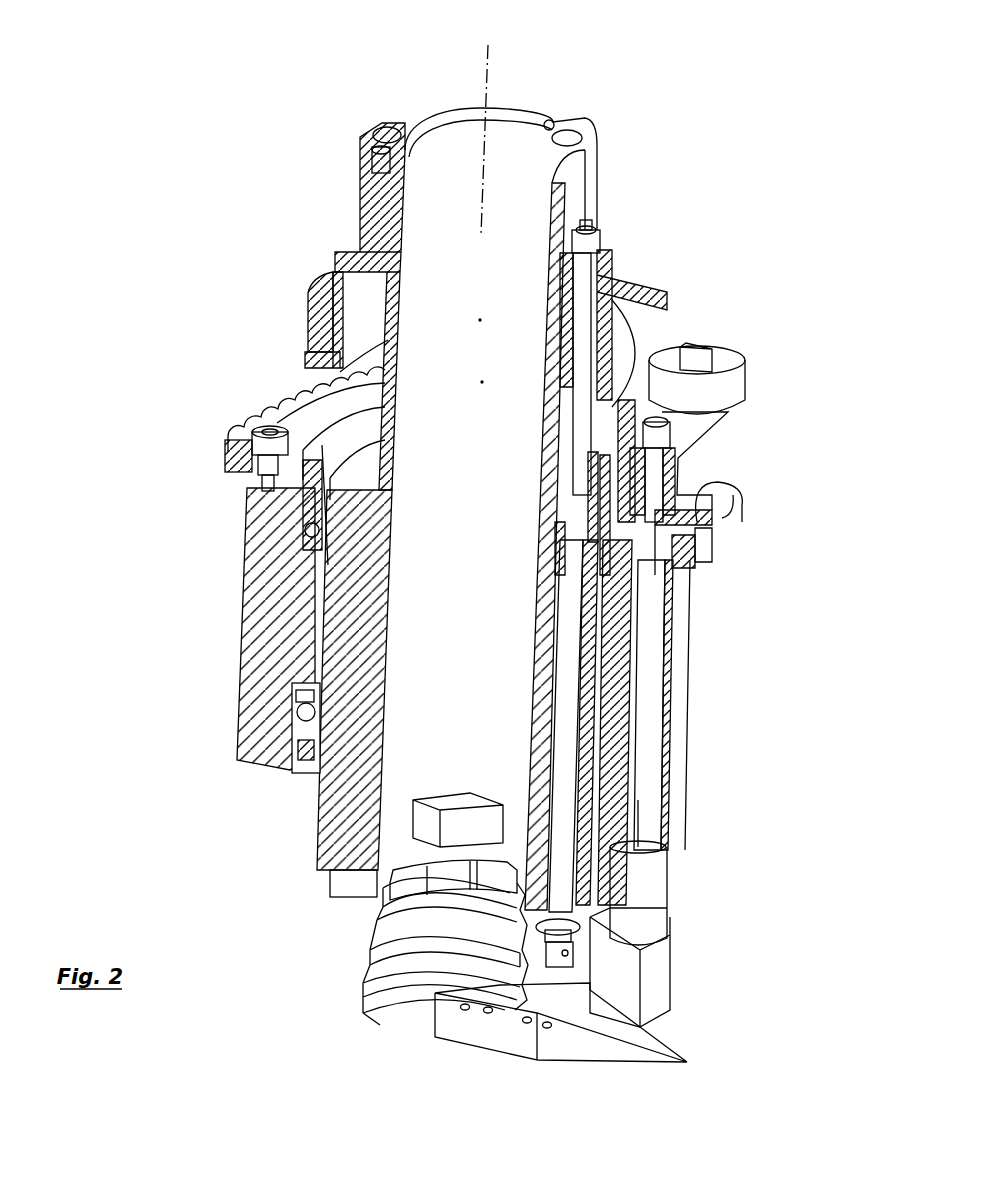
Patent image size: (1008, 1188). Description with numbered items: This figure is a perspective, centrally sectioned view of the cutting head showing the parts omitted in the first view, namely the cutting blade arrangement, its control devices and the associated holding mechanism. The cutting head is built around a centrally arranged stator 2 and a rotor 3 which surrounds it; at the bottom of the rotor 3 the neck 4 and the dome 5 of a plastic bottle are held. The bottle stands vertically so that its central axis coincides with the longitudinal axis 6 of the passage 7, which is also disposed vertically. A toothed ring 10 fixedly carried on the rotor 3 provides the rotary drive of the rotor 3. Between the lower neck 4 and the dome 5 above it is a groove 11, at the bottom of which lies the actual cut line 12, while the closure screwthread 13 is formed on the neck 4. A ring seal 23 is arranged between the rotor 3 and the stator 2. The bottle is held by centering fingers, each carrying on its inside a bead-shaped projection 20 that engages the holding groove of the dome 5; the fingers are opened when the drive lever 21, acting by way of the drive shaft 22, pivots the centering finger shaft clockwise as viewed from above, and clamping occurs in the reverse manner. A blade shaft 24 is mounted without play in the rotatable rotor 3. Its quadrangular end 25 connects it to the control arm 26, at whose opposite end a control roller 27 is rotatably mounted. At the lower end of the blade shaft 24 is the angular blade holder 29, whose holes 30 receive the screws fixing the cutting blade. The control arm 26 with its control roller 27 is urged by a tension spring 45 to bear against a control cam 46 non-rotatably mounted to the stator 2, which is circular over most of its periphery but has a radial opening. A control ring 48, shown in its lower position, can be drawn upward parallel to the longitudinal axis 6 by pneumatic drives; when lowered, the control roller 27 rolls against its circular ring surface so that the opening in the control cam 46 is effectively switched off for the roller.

The stator 2 is at (380, 225).
The rotor 3 is at (262, 584).
The neck 4 is at (365, 1003).
The dome 5 is at (385, 915).
The longitudinal axis 6 is at (492, 47).
The passage 7 is at (457, 531).
The toothed ring 10 is at (228, 458).
The groove 11 is at (380, 932).
The cut line 12 is at (372, 957).
The closure screwthread 13 is at (365, 985).
The bead-shaped projection 20 is at (493, 895).
The drive lever 21 is at (612, 292).
The drive shaft 22 is at (585, 330).
The ring seal 23 is at (563, 806).
The blade shaft 24 is at (640, 741).
The quadrangular end 25 is at (700, 482).
The control arm 26 is at (700, 441).
The control roller 27 is at (732, 389).
The blade holder 29 is at (592, 1013).
The holes 30 is at (527, 1023).
The tension spring 45 is at (740, 500).
The control cam 46 is at (303, 360).
The control ring 48 is at (312, 322).